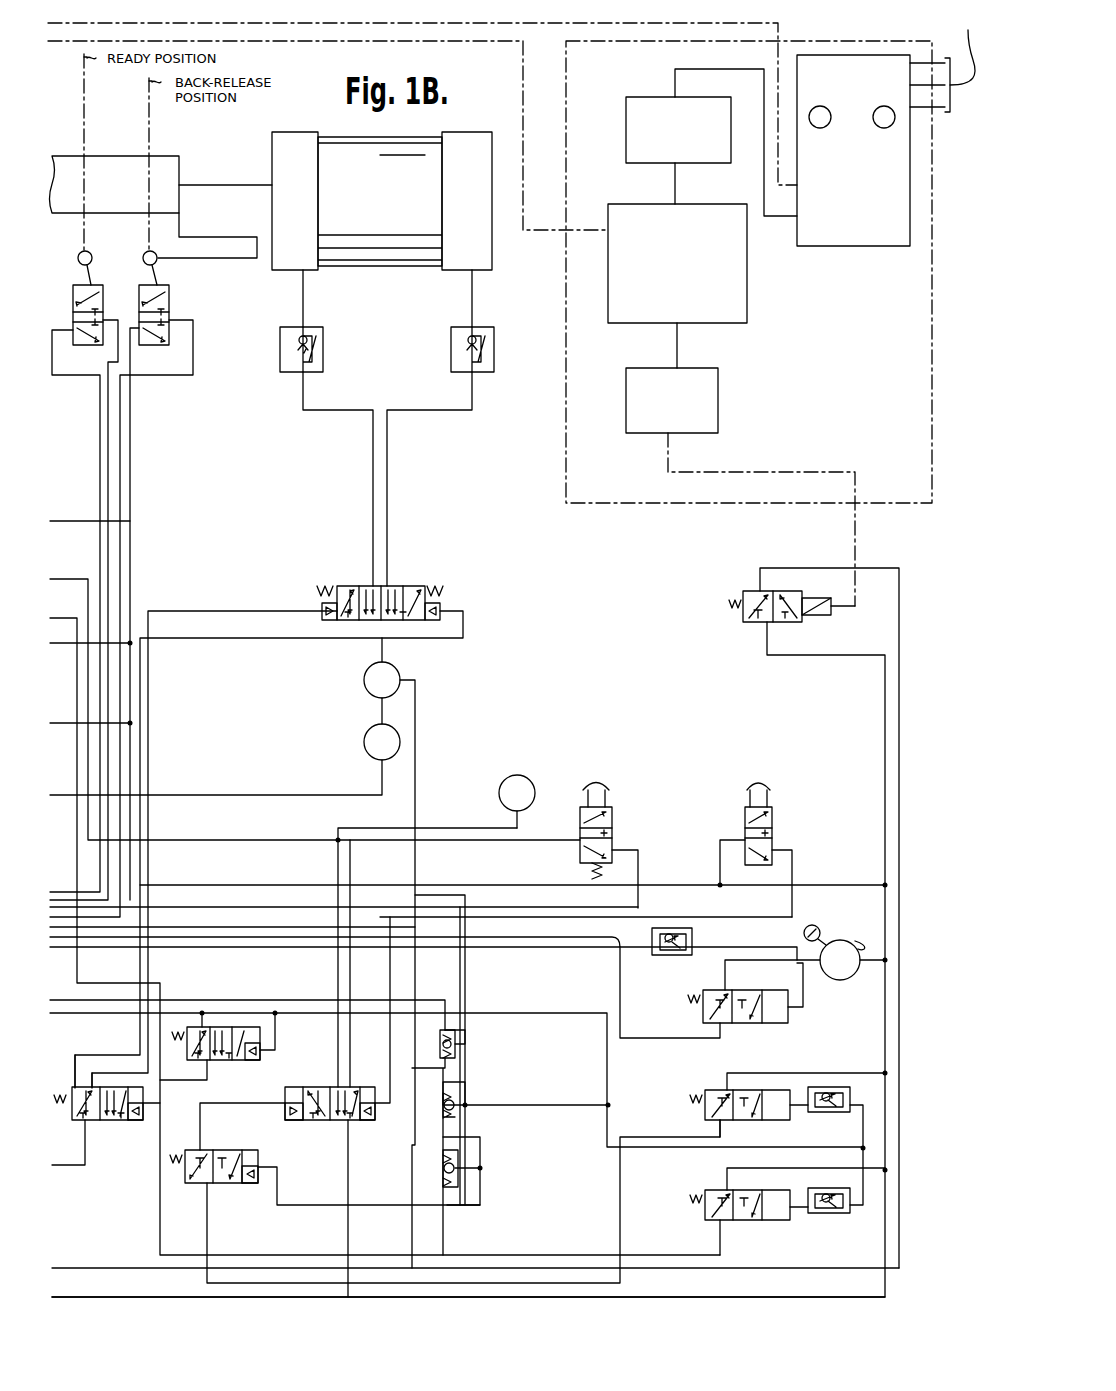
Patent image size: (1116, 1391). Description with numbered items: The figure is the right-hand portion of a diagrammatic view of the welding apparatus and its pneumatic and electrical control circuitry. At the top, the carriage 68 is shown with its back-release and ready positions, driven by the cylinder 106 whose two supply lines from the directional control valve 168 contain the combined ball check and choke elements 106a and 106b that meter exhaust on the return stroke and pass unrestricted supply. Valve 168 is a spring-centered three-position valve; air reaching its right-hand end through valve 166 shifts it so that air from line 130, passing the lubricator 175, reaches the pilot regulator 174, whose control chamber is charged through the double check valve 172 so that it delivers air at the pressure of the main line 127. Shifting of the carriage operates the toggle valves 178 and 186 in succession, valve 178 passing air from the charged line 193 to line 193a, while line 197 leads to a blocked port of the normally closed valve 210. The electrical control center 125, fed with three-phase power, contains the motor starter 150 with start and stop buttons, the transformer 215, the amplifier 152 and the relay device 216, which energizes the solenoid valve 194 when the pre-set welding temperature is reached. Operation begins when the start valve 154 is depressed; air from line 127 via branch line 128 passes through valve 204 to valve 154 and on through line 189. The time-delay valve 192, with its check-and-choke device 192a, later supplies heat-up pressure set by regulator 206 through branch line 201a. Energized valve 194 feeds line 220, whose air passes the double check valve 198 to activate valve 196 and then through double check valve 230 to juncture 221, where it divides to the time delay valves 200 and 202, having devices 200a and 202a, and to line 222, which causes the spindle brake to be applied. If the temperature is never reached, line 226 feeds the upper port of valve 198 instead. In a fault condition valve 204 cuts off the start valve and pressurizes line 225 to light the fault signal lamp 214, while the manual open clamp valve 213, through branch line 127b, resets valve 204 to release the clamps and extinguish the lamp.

The carriage 68 is at (145, 198).
The cylinder 106 is at (395, 198).
The combined ball check and adjustable choke valve element 106a is at (451, 350).
The combined ball check and choke 106b is at (322, 350).
The electrical control center 125 is at (932, 357).
The line 127 is at (885, 705).
The branch line 127b is at (108, 463).
The branch line 128 is at (350, 1230).
The line 130 is at (175, 795).
The motor starter 150 is at (897, 243).
The amplifier 152 is at (747, 276).
The start valve 154 is at (612, 810).
The valve 166 is at (138, 1122).
The directional control valve 168 is at (350, 586).
The double check valve 172 is at (465, 1052).
The pilot regulator 174 is at (364, 686).
The lubricator 175 is at (364, 745).
The toggle valve 178 is at (167, 284).
The toggle valve 186 is at (103, 285).
The line 189 is at (638, 858).
The valve 192 is at (790, 1030).
The ball-check valve and choke device 192a is at (683, 955).
The line 193 is at (193, 364).
The line 193a is at (130, 475).
The solenoid-operated two-position valve 194 is at (750, 625).
The valve 196 is at (238, 1185).
The line 197 is at (80, 870).
The double check valve 198 is at (460, 1182).
The time delay valve 200 is at (717, 1092).
The check valve and choke device 200a is at (818, 1112).
The branch line 201a is at (620, 990).
The time delay valve 202 is at (717, 1192).
The check valve and choke device 202a is at (820, 1213).
The two-position valve 204 is at (332, 1122).
The regulator 206 is at (850, 980).
The valve 210 is at (255, 1062).
The open clamp valve 213 is at (765, 805).
The fault signal lamp 214 is at (535, 790).
The transformer 215 is at (626, 148).
The relay device 216 is at (718, 425).
The line 220 is at (899, 688).
The juncture 221 is at (608, 1105).
The line 222 is at (500, 1013).
The line 225 is at (338, 862).
The line 226 is at (412, 983).
The double check valve 230 is at (460, 1115).